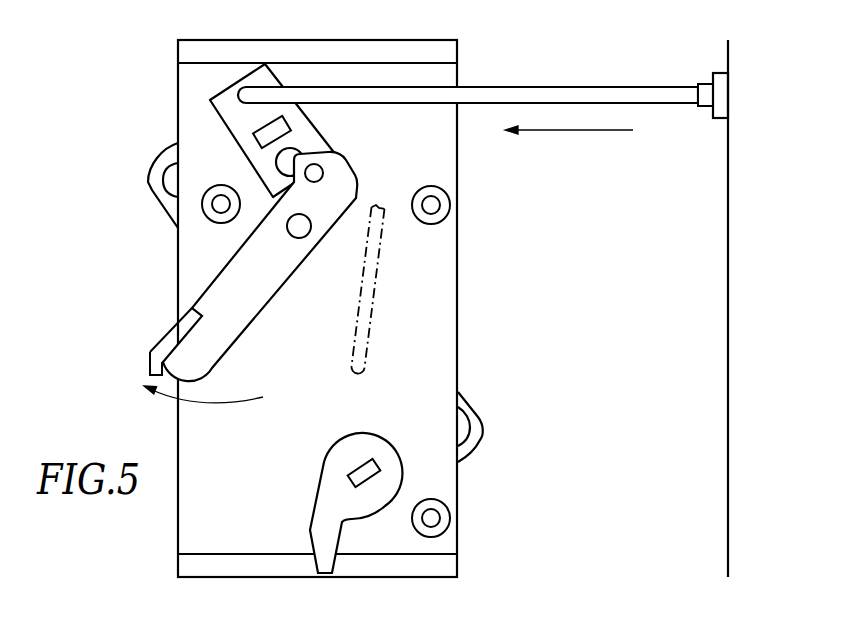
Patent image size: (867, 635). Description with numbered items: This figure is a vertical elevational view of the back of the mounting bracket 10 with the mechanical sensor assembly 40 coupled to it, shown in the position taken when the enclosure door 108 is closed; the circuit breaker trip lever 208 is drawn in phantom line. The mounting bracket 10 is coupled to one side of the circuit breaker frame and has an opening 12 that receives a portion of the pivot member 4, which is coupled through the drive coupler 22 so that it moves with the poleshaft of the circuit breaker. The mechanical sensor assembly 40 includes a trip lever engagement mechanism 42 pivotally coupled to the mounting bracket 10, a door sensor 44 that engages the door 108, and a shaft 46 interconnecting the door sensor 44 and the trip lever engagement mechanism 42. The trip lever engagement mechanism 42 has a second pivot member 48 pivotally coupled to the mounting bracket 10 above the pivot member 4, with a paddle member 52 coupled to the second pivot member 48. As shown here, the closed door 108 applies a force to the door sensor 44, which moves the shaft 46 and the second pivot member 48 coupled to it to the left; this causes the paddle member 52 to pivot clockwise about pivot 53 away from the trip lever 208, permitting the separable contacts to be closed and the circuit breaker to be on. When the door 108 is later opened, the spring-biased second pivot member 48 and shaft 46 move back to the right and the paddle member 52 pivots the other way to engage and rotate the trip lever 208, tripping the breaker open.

The pivot member 4 is at (470, 410).
The mounting bracket 10 is at (418, 151).
The opening 12 is at (345, 481).
The drive coupler 22 is at (340, 452).
The mechanical sensor assembly 40 is at (137, 559).
The trip lever engagement mechanism 42 is at (156, 232).
The door sensor 44 is at (705, 86).
The shaft 46 is at (506, 96).
The second pivot member 48 is at (227, 115).
The paddle member 52 is at (248, 304).
The pivot 53 is at (311, 226).
The door 108 is at (729, 274).
The trip lever 208 is at (380, 262).